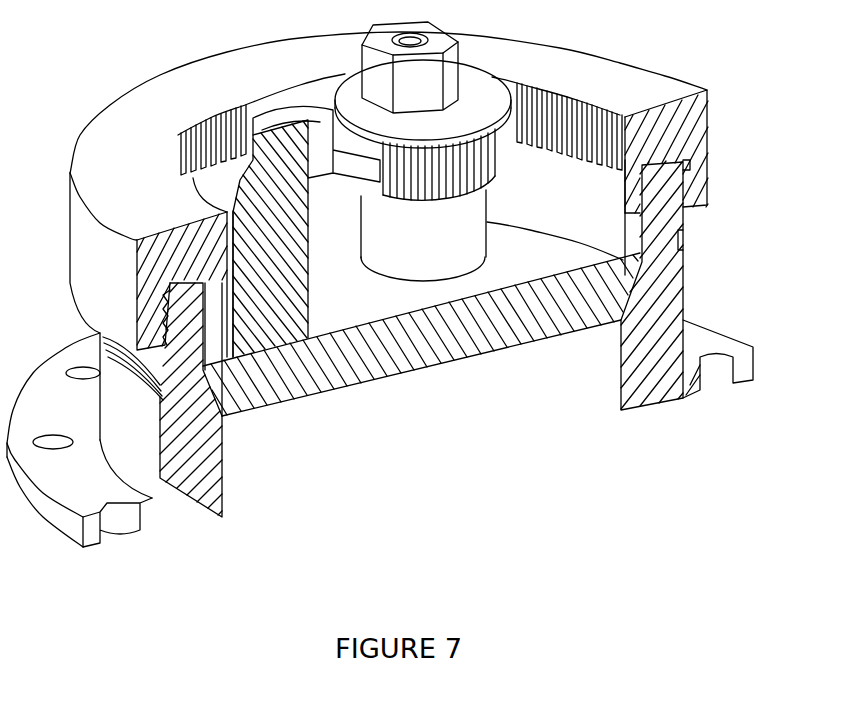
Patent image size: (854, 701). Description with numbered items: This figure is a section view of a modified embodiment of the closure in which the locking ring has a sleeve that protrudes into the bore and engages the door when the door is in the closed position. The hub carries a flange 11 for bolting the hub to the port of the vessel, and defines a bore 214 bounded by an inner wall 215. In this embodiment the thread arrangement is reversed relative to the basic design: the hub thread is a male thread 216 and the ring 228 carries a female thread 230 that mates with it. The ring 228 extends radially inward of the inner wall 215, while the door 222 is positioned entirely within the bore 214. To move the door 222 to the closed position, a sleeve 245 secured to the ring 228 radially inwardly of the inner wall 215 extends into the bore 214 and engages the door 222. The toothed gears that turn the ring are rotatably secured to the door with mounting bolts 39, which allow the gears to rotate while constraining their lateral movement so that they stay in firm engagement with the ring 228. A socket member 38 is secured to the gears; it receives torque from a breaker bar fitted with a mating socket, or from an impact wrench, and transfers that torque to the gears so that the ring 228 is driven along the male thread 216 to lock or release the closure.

The flange 11 is at (120, 540).
The socket member 38 is at (370, 77).
The mounting bolts 39 is at (297, 260).
The bore 214 is at (425, 455).
The inner wall 215 is at (647, 285).
The male thread 216 is at (683, 232).
The door 222 is at (435, 345).
The ring 228 is at (140, 128).
The female thread 230 is at (687, 193).
The sleeve 245 is at (572, 200).